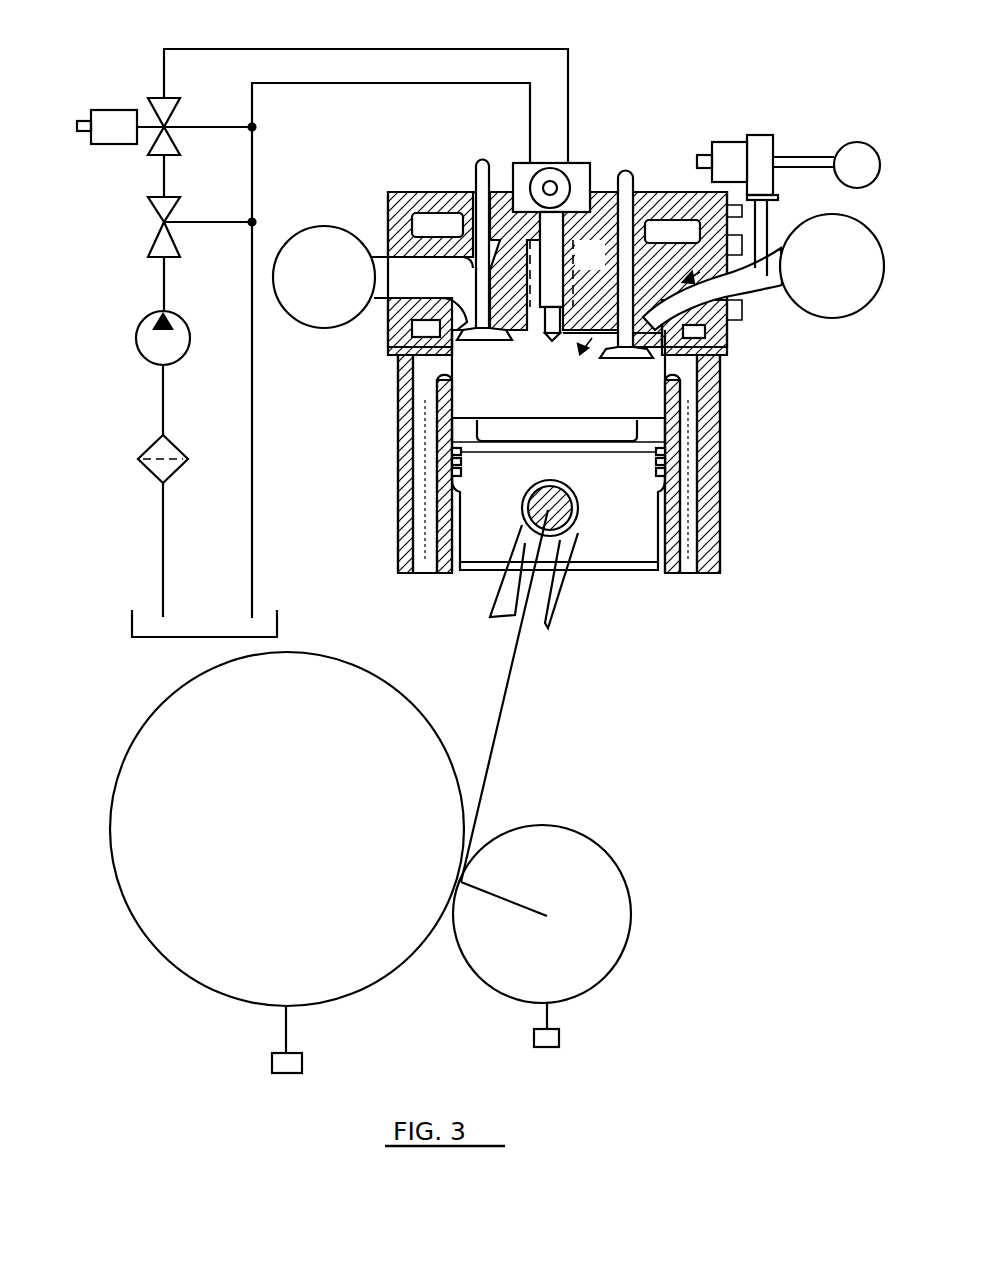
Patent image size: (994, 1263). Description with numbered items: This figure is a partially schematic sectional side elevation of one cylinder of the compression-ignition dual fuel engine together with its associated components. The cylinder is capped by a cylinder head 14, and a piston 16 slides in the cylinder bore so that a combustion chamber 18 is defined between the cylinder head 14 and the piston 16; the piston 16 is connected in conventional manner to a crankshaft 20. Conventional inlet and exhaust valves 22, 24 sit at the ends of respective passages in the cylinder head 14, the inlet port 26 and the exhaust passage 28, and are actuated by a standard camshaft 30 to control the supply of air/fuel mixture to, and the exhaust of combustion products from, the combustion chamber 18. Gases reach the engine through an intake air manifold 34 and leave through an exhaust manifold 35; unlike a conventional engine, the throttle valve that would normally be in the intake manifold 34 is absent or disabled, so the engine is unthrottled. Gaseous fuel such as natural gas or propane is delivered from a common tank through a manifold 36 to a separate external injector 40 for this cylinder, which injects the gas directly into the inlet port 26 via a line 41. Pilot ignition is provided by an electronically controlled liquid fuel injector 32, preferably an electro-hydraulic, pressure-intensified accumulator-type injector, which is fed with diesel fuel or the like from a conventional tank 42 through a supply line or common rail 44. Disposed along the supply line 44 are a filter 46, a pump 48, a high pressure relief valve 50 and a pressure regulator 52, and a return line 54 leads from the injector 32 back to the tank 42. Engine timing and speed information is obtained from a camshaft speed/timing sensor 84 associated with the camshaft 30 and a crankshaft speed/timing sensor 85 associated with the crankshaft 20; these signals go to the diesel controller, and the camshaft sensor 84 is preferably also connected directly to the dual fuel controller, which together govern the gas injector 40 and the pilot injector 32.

The cylinder head 14 is at (415, 190).
The piston 16 is at (610, 567).
The combustion chamber 18 is at (468, 393).
The crankshaft 20 is at (600, 863).
The inlet valve 22 is at (634, 186).
The exhaust valve 24 is at (475, 167).
The inlet port 26 is at (680, 313).
The exhaust passage 28 is at (380, 328).
The camshaft 30 is at (211, 977).
The pilot fuel injector 32 is at (590, 162).
The intake air manifold 34 is at (870, 240).
The exhaust manifold 35 is at (333, 228).
The gas manifold 36 is at (857, 142).
The gaseous fuel injector 40 is at (757, 135).
The line 41 is at (743, 297).
The tank 42 is at (277, 626).
The supply line 44 is at (380, 48).
The filter 46 is at (184, 452).
The pump 48 is at (188, 319).
The high pressure relief valve 50 is at (178, 250).
The pressure regulator 52 is at (180, 100).
The return line 54 is at (252, 512).
The camshaft speed/timing sensor 84 is at (560, 1038).
The crankshaft speed/timing sensor 85 is at (302, 1062).